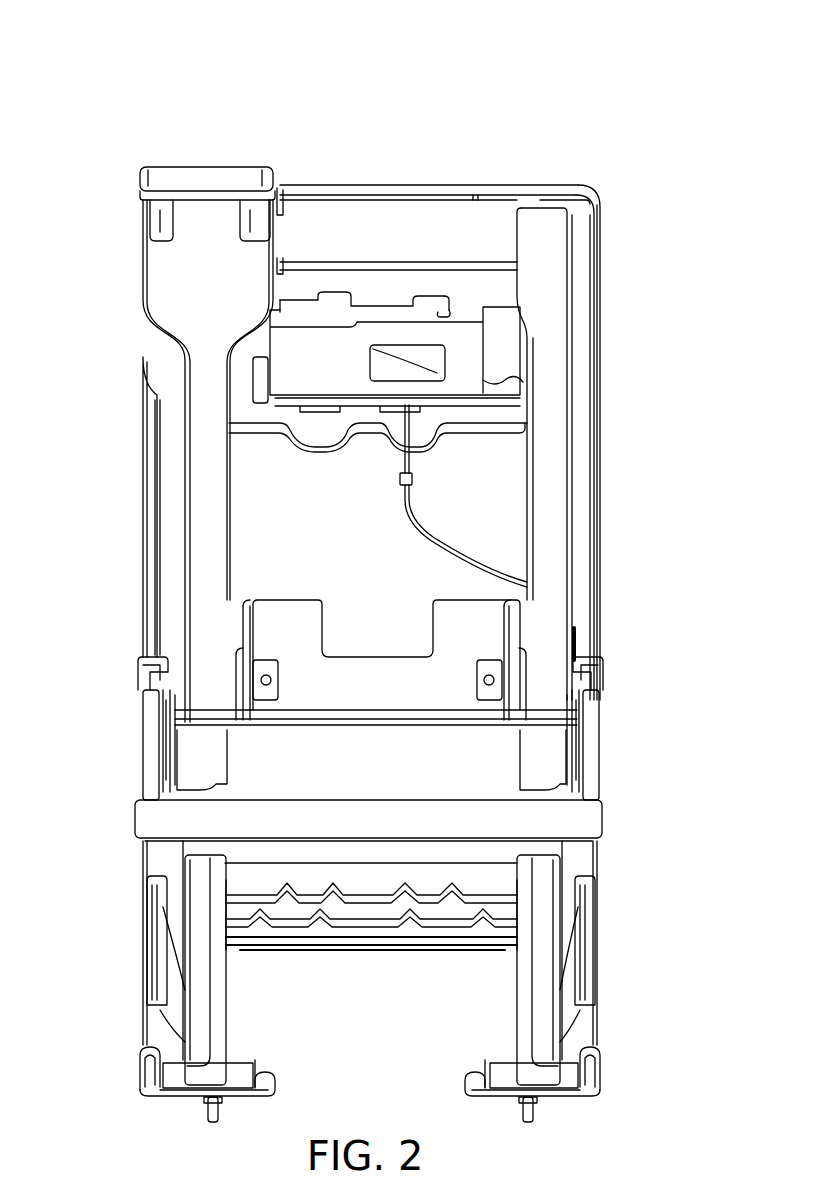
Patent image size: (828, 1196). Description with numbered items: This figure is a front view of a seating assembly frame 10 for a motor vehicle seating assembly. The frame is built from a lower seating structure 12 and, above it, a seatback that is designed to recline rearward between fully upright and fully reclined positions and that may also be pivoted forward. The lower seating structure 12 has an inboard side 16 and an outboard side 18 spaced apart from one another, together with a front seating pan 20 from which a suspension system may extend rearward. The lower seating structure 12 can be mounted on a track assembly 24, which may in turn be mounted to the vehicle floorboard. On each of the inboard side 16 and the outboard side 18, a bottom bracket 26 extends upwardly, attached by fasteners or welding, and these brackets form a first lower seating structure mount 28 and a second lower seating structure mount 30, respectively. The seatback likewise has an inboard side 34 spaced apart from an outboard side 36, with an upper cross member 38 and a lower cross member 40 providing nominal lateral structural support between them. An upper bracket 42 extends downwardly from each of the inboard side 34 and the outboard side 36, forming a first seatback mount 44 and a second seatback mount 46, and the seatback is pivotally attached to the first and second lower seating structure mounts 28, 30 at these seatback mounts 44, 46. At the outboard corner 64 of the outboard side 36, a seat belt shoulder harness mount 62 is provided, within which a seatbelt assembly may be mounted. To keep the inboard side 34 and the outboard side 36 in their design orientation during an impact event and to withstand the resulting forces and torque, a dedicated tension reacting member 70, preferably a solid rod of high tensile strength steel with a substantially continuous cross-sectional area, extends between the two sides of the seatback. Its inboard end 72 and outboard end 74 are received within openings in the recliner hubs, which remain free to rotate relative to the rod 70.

The seating assembly frame 10 is at (636, 126).
The lower seating structure 12 is at (567, 963).
The inboard side 16 is at (567, 1040).
The outboard side 18 is at (197, 980).
The front seating pan 20 is at (605, 807).
The track assembly 24 is at (182, 1097).
The bottom bracket 26 is at (148, 725).
The first lower seating structure mount 28 is at (590, 702).
The second lower seating structure mount 30 is at (148, 707).
The inboard side 34 is at (578, 427).
The outboard side 36 is at (177, 470).
The upper cross member 38 is at (390, 225).
The lower cross member 40 is at (347, 673).
The upper bracket 42 is at (160, 658).
The first seatback mount 44 is at (583, 613).
The second seatback mount 46 is at (148, 623).
The seat belt shoulder harness mount 62 is at (167, 252).
The outboard corner 64 is at (165, 272).
The tension reacting member 70 is at (358, 727).
The inboard end 72 is at (495, 733).
The outboard end 74 is at (196, 725).